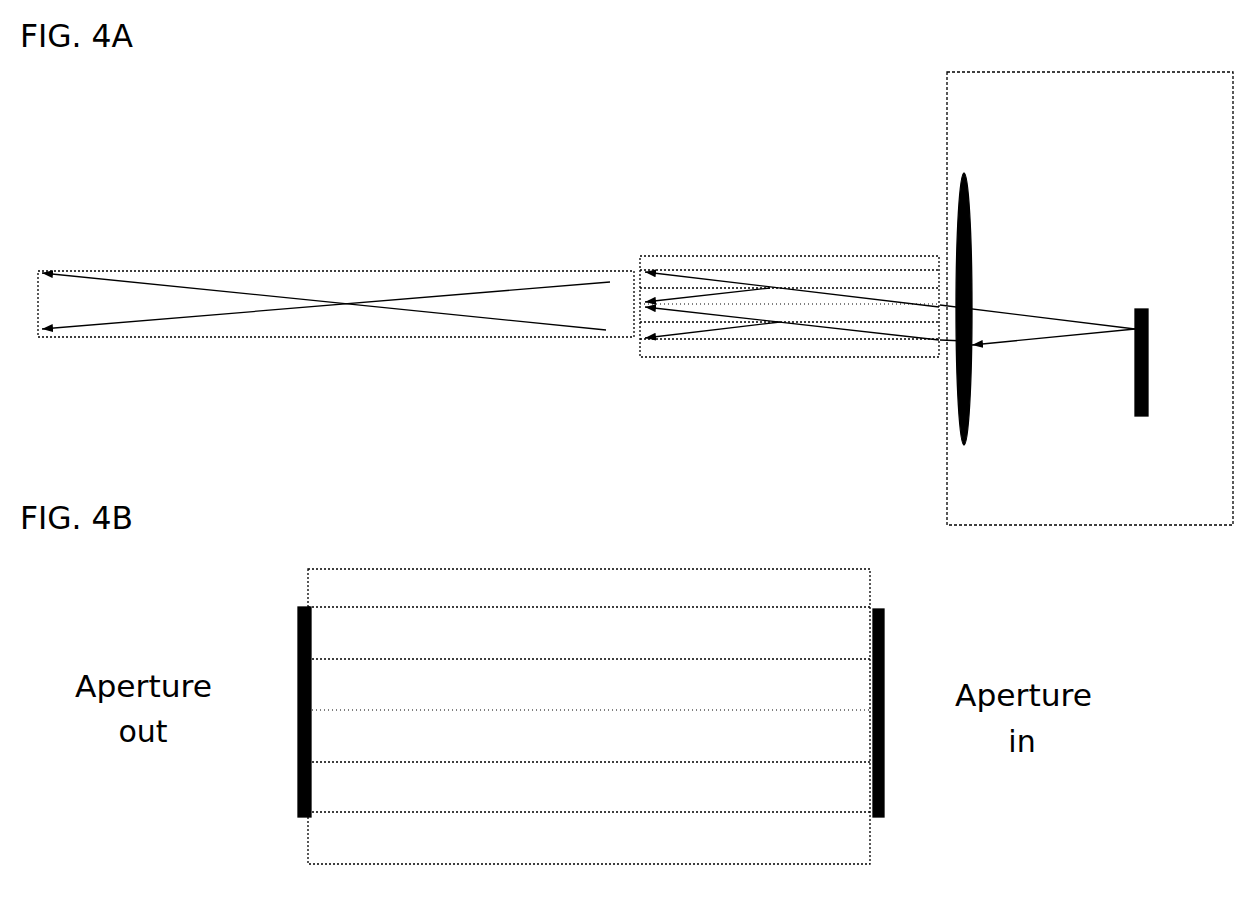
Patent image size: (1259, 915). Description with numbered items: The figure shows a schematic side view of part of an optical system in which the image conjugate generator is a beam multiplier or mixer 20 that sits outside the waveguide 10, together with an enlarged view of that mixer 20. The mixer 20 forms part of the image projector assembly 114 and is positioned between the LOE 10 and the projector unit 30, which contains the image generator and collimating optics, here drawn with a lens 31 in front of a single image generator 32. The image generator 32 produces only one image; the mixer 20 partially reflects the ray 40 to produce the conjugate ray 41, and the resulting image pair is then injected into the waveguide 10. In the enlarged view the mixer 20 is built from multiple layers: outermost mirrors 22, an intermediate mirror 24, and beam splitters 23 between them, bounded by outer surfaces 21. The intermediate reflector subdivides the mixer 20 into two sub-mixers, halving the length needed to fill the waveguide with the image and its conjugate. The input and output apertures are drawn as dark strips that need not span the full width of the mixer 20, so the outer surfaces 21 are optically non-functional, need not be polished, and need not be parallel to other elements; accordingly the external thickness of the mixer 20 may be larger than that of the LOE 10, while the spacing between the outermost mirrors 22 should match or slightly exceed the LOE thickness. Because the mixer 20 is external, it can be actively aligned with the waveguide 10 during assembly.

In FIG. 4A, the waveguide 10 is at (336, 284).
In FIG. 4A, the mixer 20 is at (789, 284).
In FIG. 4B, the mixer 20 is at (591, 689).
In FIG. 4B, the outer surfaces 21 is at (589, 701).
In FIG. 4B, the mirrors 22 is at (589, 697).
In FIG. 4B, the beam splitters 23 is at (589, 697).
In FIG. 4B, the mirror 24 is at (589, 710).
In FIG. 4A, the projector unit 30 is at (1090, 279).
In FIG. 4A, the lens 31 is at (971, 294).
In FIG. 4A, the image generator 32 is at (1168, 362).
In FIG. 4A, the ray 40 is at (588, 308).
In FIG. 4A, the ray 41 is at (411, 310).
In FIG. 4A, the image projector assembly 114 is at (843, 142).